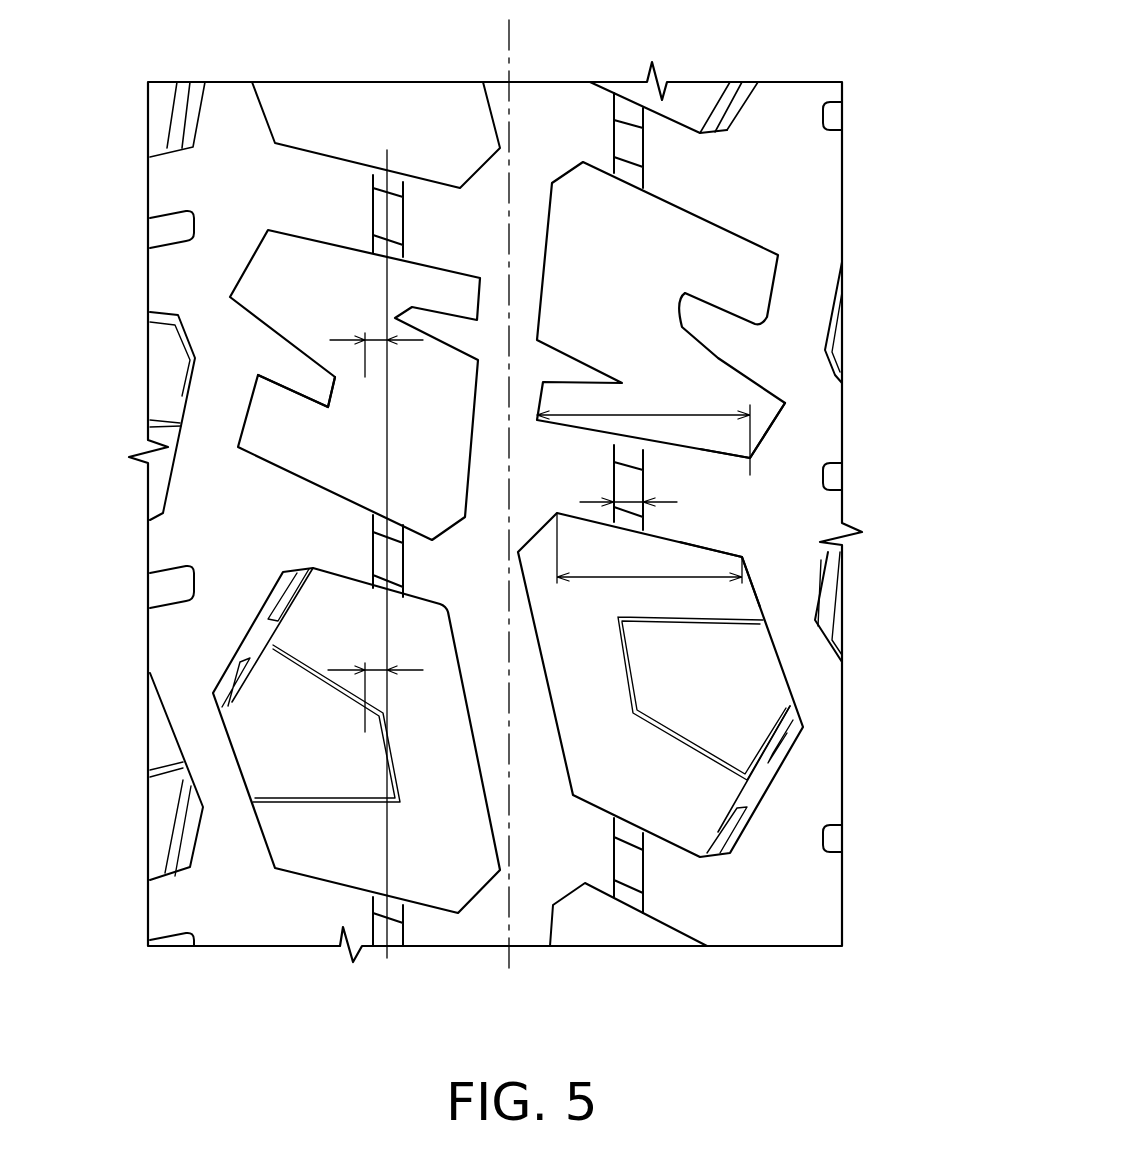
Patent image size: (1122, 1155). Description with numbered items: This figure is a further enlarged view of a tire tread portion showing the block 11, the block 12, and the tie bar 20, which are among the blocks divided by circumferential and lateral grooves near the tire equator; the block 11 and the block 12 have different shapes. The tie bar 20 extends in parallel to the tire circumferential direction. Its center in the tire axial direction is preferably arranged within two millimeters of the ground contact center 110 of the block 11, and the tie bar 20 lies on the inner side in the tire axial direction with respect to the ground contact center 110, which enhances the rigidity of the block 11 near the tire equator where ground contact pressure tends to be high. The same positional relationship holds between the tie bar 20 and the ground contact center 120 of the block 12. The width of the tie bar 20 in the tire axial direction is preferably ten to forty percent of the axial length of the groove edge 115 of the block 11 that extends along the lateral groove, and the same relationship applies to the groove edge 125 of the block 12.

The block 11 is at (288, 262).
The block 12 is at (310, 743).
The tie bar 20 is at (397, 217).
The ground contact center 110 is at (365, 377).
The groove edge 115 is at (720, 450).
The ground contact center 120 is at (363, 732).
The groove edge 125 is at (743, 530).